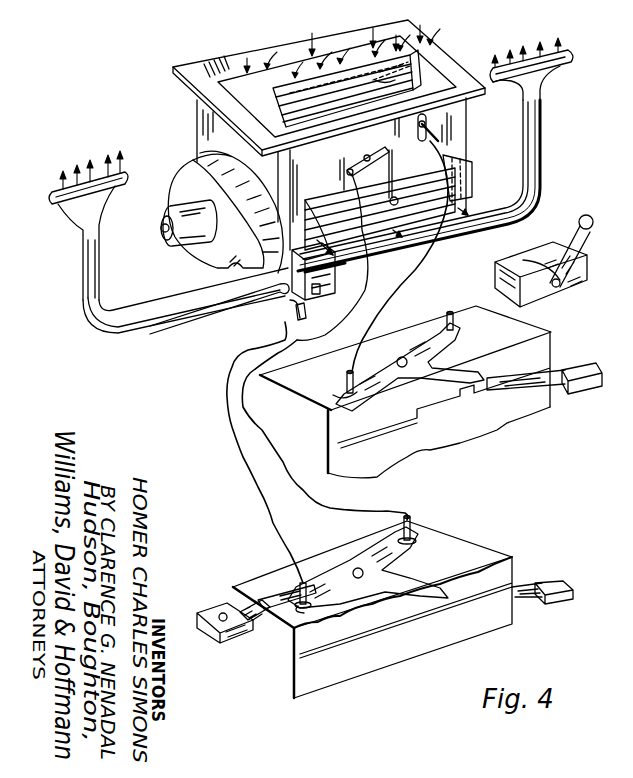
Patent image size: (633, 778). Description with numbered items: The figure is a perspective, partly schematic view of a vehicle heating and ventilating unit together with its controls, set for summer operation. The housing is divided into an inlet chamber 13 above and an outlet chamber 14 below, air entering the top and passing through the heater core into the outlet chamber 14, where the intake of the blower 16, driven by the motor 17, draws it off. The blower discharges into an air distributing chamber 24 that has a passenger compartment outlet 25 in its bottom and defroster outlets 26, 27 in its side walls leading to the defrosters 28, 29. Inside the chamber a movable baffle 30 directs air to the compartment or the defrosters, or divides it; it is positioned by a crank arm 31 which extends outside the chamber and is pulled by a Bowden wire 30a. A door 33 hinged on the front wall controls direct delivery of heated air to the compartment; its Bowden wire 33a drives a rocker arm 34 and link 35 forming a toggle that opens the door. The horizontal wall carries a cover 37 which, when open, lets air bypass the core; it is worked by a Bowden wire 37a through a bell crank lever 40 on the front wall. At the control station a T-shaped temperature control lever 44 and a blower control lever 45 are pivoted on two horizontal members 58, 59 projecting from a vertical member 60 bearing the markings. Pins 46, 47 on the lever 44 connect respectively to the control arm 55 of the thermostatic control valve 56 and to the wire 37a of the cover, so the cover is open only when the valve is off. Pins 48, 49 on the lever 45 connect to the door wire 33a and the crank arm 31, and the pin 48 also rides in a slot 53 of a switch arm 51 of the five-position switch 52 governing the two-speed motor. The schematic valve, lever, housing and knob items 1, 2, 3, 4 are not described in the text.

The knob 1 is at (589, 220).
The switch lever 2 is at (564, 230).
The switch slot 3 is at (544, 242).
The switch housing 4 is at (527, 257).
The inlet chamber 13 is at (220, 58).
The outlet chamber 14 is at (267, 104).
The blower 16 is at (212, 250).
The motor 17 is at (173, 248).
The air distributing chamber 24 is at (300, 271).
The passenger compartment outlet 25 is at (283, 325).
The defroster outlet 26 is at (253, 290).
The defroster outlet 27 is at (330, 268).
The defroster 28 is at (128, 178).
The defroster 29 is at (566, 65).
The movable baffle 30 is at (322, 286).
The Bowden wire 30a is at (372, 506).
The crank arm 31 is at (290, 318).
The door 33 is at (474, 195).
The Bowden wire 33a is at (262, 492).
The rocker arm 34 is at (367, 152).
The link 35 is at (395, 162).
The cover 37 is at (428, 80).
The Bowden wire 37a is at (416, 286).
The bell crank lever 40 is at (443, 135).
The temperature control lever 44 is at (575, 392).
The blower control lever 45 is at (552, 604).
The pin 46 is at (453, 322).
The pin 47 is at (347, 385).
The pin 48 is at (299, 592).
The pin 49 is at (414, 524).
The switch arm 51 is at (265, 622).
The switch 52 is at (240, 643).
The slot 53 is at (266, 585).
The control arm 55 is at (581, 252).
The thermostatic control valve 56 is at (578, 278).
The horizontal member 58 is at (507, 338).
The horizontal member 59 is at (485, 562).
The vertical member 60 is at (505, 425).